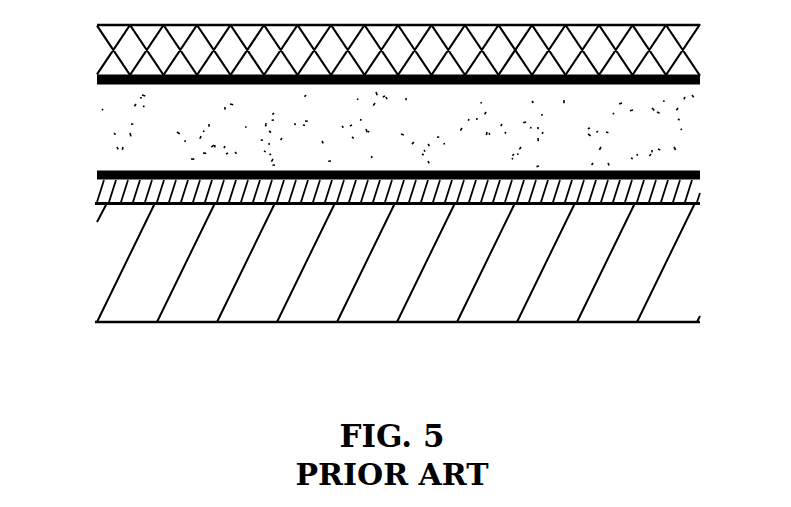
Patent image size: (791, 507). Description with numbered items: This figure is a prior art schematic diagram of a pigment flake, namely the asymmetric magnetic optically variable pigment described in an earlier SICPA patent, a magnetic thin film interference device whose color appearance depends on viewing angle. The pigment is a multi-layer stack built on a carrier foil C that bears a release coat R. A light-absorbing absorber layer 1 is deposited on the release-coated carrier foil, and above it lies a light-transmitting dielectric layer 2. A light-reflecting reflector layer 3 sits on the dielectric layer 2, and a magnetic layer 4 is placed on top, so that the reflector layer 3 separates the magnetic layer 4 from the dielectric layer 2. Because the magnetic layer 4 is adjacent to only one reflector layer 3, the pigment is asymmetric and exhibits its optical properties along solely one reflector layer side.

The magnetic layer 4 is at (670, 50).
The reflector layer 3 is at (712, 85).
The dielectric layer 2 is at (130, 127).
The absorber layer 1 is at (92, 177).
The release coat R is at (693, 190).
The carrier foil C is at (678, 265).